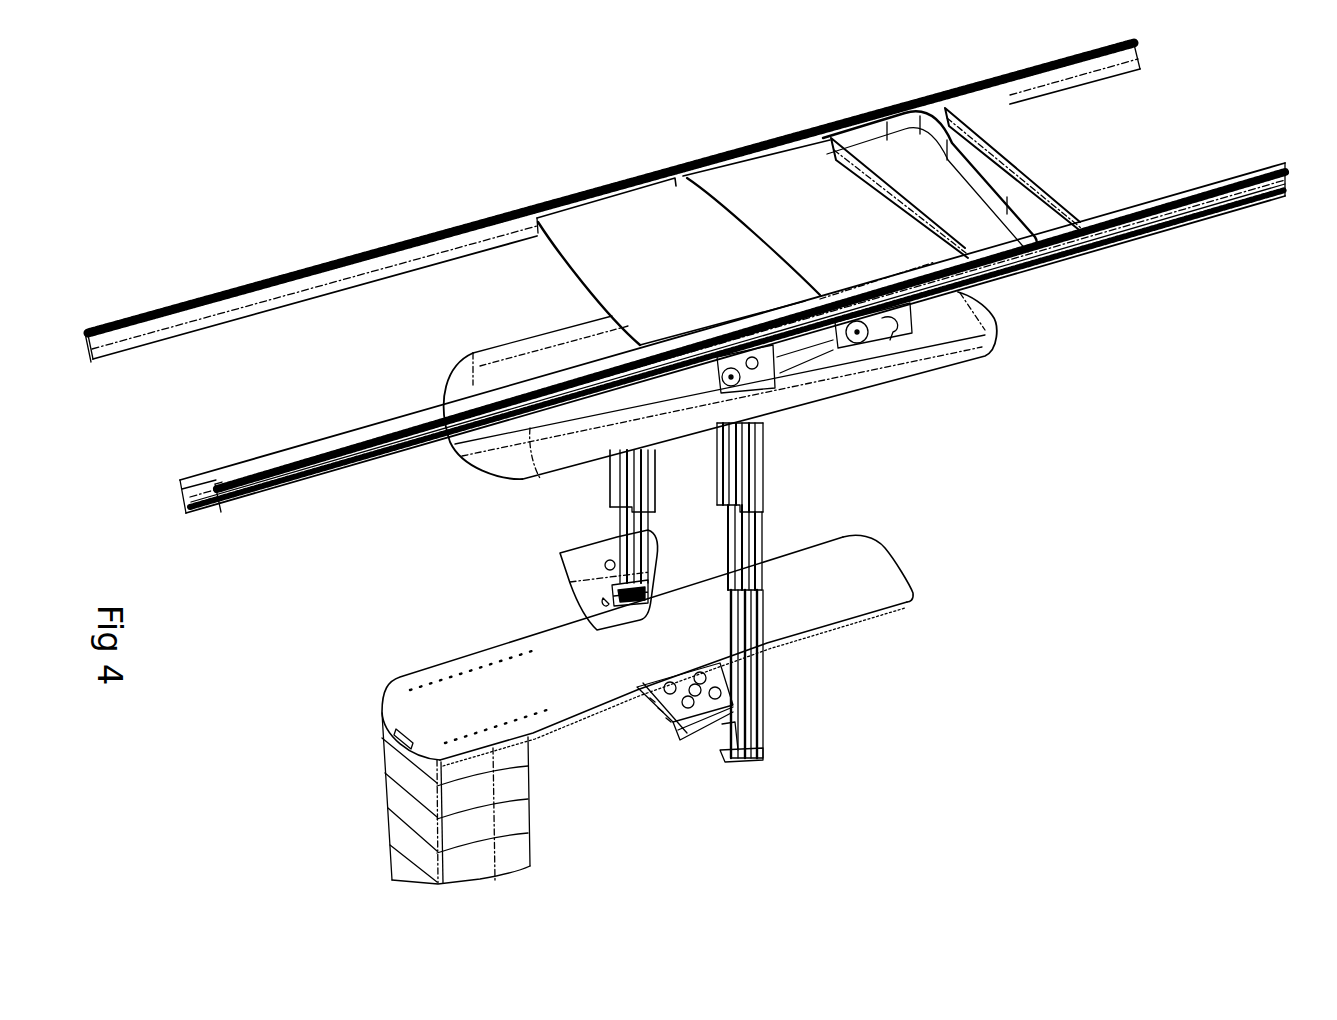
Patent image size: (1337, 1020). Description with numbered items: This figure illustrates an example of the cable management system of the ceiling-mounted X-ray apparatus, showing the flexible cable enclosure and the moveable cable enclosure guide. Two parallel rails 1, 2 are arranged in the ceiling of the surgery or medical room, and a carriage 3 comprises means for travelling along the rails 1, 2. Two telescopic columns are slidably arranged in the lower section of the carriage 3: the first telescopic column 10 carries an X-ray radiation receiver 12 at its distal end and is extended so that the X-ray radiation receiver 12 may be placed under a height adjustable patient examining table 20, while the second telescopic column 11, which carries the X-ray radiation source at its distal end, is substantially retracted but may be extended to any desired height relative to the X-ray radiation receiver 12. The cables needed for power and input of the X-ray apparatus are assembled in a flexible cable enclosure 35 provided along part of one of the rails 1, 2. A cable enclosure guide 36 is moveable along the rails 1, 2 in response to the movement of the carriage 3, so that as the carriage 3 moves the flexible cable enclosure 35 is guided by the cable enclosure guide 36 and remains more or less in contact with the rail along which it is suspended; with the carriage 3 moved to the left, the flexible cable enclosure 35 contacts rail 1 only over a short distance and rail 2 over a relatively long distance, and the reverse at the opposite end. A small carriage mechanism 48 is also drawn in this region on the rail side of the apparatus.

The rail 1 is at (238, 493).
The rail 2 is at (203, 298).
The carriage 3 is at (498, 297).
The first telescopic column 10 is at (768, 698).
The second telescopic column 11 is at (608, 503).
The X-ray radiation receiver 12 is at (667, 732).
The height adjustable patient examining table 20 is at (893, 583).
The flexible cable enclosure 35 is at (190, 480).
The cable enclosure guide 36 is at (1047, 203).
The carriage 48 is at (840, 347).